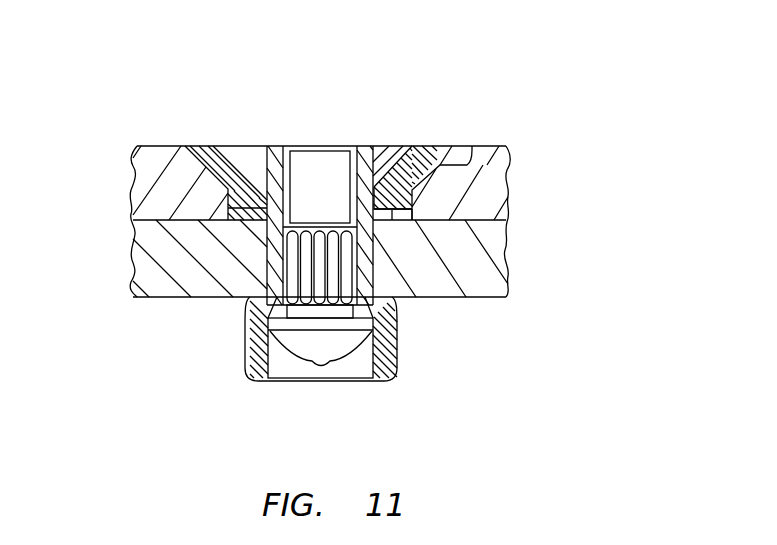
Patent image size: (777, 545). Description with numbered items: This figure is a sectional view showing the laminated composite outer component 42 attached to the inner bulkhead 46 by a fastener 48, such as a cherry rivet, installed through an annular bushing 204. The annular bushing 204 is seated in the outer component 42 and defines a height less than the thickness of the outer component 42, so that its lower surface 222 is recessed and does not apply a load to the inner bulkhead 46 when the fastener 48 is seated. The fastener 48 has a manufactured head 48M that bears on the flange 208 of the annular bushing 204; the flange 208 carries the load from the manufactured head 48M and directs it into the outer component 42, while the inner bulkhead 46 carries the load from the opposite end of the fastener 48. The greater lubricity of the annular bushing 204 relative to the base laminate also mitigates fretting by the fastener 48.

The outer component 42 is at (522, 180).
The inner bulkhead 46 is at (541, 250).
The fastener 48 is at (346, 214).
The manufactured head 48M is at (265, 145).
The annular bushing 204 is at (192, 178).
The flange 208 is at (470, 145).
The lower surface 222 is at (392, 210).